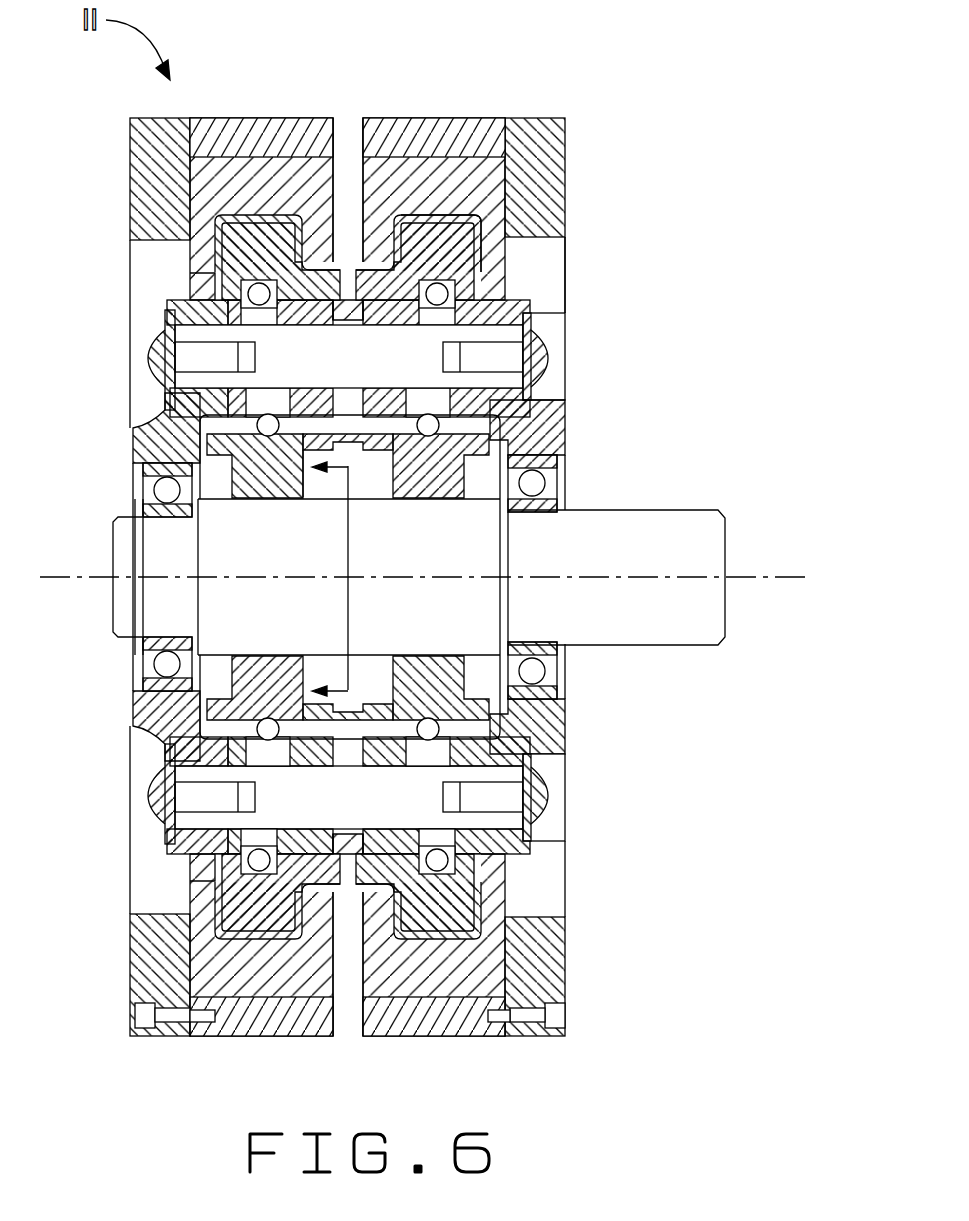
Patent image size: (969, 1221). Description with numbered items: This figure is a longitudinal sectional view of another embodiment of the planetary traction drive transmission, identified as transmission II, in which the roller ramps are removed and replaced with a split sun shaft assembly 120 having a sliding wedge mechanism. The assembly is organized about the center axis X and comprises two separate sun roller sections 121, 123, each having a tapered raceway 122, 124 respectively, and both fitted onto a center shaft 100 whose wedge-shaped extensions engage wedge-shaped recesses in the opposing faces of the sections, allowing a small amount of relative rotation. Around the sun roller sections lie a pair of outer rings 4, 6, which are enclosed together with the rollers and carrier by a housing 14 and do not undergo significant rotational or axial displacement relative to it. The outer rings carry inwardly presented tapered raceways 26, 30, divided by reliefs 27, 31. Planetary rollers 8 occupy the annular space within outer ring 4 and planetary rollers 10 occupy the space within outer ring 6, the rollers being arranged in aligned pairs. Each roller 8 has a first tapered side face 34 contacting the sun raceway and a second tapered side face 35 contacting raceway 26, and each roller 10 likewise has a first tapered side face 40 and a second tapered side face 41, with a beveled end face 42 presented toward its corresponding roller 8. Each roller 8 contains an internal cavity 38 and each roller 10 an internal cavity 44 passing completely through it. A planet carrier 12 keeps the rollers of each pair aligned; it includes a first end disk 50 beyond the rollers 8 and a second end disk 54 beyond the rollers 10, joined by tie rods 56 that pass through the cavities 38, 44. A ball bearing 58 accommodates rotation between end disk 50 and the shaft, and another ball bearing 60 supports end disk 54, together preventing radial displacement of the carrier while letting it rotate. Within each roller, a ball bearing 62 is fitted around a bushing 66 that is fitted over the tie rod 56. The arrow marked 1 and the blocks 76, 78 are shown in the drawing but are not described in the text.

The direction arrow 1 is at (330, 579).
The outer ring 4 is at (483, 192).
The outer ring 6 is at (287, 150).
The planetary roller 8 is at (477, 243).
The planetary roller 10 is at (237, 247).
The planet carrier 12 is at (563, 318).
The housing 14 is at (492, 118).
The tapered raceway 26 is at (508, 258).
The relief 27 is at (437, 212).
The tapered raceway 30 is at (200, 265).
The relief 31 is at (247, 214).
The first tapered side face 34 is at (492, 500).
The second tapered side face 35 is at (507, 514).
The internal cavity 38 is at (482, 742).
The first tapered side face 40 is at (221, 502).
The second tapered side face 41 is at (217, 513).
The beveled end face 42 is at (357, 125).
The internal cavity 44 is at (175, 760).
The first end disk 50 is at (543, 433).
The second end disk 54 is at (165, 443).
The tie rod 56 is at (332, 366).
The ball bearing 58 is at (560, 467).
The ball bearing 60 is at (165, 490).
The ball bearing 62 is at (175, 870).
The bushing 66 is at (168, 828).
The housing block 76 is at (568, 975).
The housing block 78 is at (130, 965).
The center shaft 100 is at (667, 510).
The split sun shaft assembly 120 is at (452, 556).
The sun roller section 121 is at (428, 567).
The tapered raceway 122 is at (368, 492).
The sun roller section 123 is at (243, 563).
The tapered raceway 124 is at (330, 500).